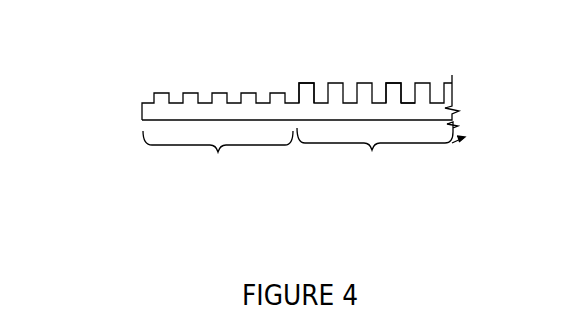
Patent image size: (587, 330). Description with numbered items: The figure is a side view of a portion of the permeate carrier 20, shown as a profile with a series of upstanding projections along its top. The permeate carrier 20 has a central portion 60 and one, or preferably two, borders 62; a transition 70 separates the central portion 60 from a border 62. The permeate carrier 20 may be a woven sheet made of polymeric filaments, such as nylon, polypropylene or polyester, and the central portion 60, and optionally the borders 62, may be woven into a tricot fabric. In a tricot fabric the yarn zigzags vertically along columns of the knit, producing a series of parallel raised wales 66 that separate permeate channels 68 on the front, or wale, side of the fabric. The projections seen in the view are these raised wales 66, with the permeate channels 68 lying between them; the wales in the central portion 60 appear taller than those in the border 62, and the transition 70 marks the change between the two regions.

The permeate carrier 20 is at (82, 135).
The transition 70 is at (294, 79).
The raised wales 66 is at (391, 80).
The permeate channels 68 is at (408, 101).
The borders 62 is at (216, 160).
The central portion 60 is at (372, 156).